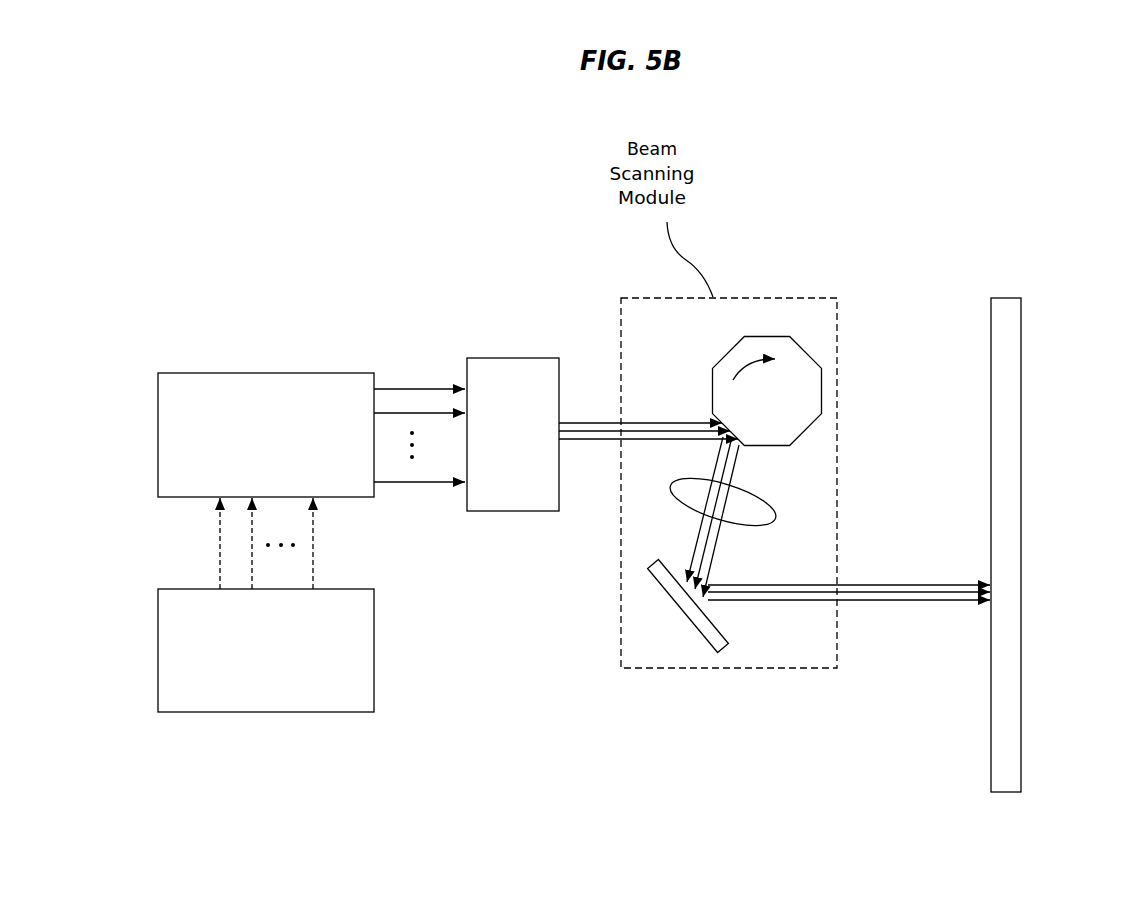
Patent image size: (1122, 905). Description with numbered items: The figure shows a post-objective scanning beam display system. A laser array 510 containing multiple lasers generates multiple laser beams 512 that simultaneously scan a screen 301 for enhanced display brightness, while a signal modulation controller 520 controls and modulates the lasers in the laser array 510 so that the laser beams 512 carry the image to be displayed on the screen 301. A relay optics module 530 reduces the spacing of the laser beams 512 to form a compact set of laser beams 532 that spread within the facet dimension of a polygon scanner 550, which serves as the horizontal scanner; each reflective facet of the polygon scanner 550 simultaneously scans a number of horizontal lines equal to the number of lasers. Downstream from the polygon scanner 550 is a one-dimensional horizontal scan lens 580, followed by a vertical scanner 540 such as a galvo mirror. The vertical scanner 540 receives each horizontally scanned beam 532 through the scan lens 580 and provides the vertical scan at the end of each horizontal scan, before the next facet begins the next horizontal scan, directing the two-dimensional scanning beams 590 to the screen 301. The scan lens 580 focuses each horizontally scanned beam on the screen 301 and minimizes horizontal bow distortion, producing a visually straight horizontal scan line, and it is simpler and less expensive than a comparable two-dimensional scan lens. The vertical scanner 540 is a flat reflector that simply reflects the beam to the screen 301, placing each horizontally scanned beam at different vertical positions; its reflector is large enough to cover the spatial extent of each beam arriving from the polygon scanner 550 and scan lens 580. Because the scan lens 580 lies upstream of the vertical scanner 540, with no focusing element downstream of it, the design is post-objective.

The screen 301 is at (1045, 571).
The laser array 510 is at (283, 469).
The laser beams 512 is at (374, 393).
The signal modulation controller 520 is at (283, 697).
The relay optics module 530 is at (530, 482).
The laser beams 532 is at (648, 373).
The vertical scanner 540 is at (596, 671).
The polygon scanner 550 is at (843, 308).
The 1-D scan lens 580 is at (638, 544).
The scanning beams 590 is at (849, 524).